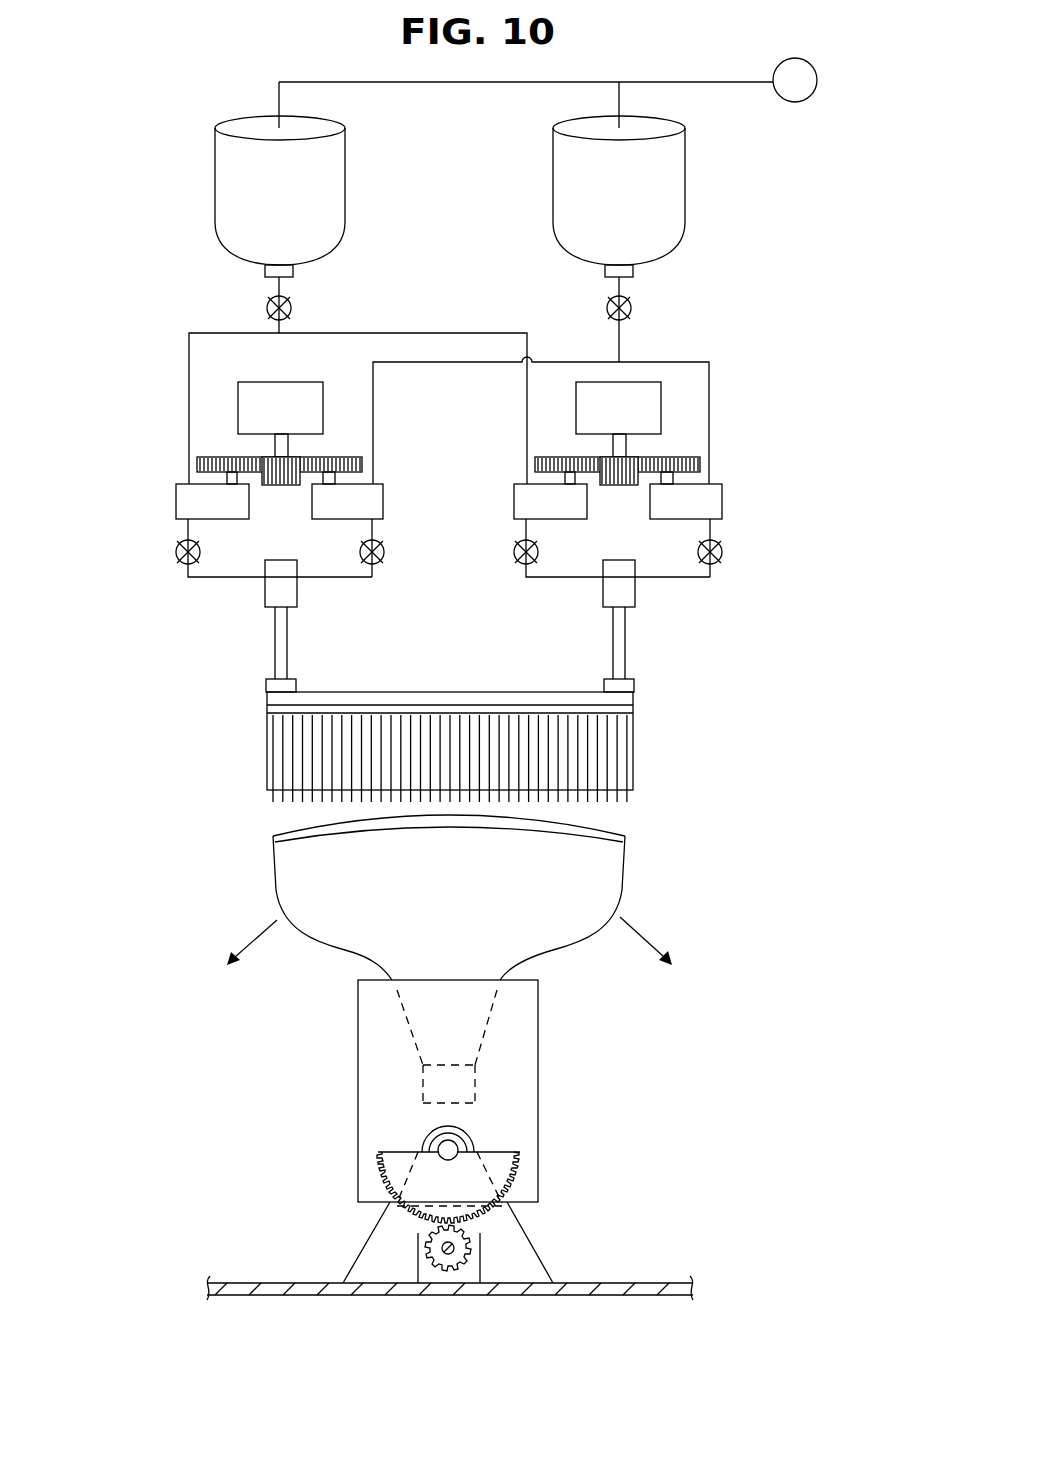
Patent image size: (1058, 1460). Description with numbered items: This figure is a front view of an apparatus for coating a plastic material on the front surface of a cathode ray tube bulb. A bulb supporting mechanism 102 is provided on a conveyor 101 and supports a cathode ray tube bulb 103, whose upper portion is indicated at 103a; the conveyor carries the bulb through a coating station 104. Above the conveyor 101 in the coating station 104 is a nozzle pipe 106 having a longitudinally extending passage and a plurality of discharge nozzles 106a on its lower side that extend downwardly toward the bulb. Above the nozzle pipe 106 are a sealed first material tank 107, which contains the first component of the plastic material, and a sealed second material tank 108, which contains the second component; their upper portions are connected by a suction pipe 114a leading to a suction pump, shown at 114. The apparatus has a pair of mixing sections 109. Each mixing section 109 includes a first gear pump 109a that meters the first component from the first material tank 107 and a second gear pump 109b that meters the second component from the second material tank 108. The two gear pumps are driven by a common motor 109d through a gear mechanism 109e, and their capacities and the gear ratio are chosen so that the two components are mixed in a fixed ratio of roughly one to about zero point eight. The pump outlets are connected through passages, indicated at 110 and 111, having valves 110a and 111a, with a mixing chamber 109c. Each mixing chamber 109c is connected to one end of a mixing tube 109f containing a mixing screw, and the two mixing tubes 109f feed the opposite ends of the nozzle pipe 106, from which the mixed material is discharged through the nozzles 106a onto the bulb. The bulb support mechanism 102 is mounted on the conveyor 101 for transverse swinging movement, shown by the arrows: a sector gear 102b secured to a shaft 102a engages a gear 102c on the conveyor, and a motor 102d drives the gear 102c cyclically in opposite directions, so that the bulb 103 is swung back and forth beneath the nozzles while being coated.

The conveyor 101 is at (242, 1283).
The bulb supporting mechanism 102 is at (373, 1105).
The shaft 102a is at (455, 1145).
The sector gear 102b is at (512, 1163).
The gear 102c is at (473, 1248).
The motor 102d is at (417, 1272).
The cathode ray tube bulb 103 is at (593, 877).
The container rim 103a is at (597, 820).
The coating station 104 is at (197, 822).
The nozzle pipe 106 is at (415, 700).
The discharge nozzles 106a is at (623, 753).
The first material tank 107 is at (337, 175).
The second material tank 108 is at (675, 180).
The mixing section 109 is at (150, 509).
The first gear pump 109a is at (183, 493).
The second gear pump 109b is at (378, 502).
The mixing chamber 109c is at (270, 592).
The common motor 109d is at (250, 410).
The gear mechanism 109e is at (342, 440).
The mixing tube 109f is at (278, 653).
The pipe 110 is at (220, 578).
The valve 110a is at (172, 552).
The pipe 111 is at (322, 578).
The valve 111a is at (384, 548).
The controller 114 is at (803, 97).
The suction pipe 114a is at (470, 85).